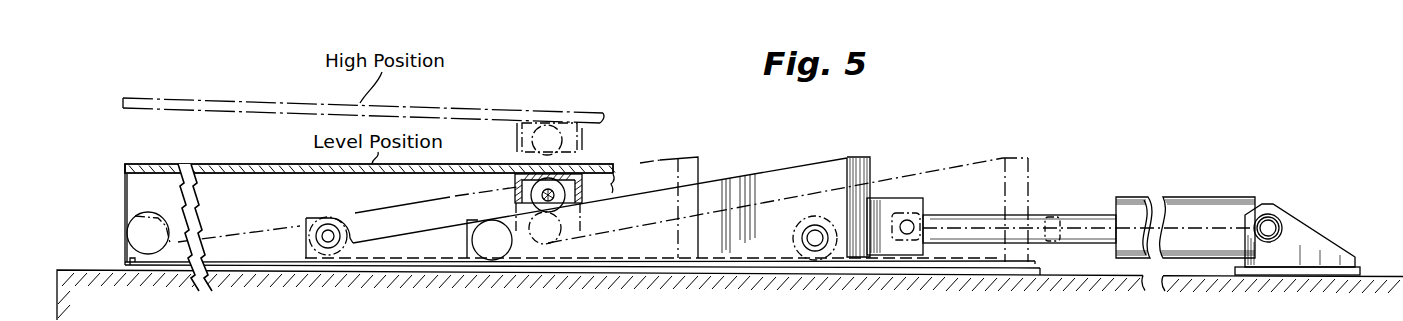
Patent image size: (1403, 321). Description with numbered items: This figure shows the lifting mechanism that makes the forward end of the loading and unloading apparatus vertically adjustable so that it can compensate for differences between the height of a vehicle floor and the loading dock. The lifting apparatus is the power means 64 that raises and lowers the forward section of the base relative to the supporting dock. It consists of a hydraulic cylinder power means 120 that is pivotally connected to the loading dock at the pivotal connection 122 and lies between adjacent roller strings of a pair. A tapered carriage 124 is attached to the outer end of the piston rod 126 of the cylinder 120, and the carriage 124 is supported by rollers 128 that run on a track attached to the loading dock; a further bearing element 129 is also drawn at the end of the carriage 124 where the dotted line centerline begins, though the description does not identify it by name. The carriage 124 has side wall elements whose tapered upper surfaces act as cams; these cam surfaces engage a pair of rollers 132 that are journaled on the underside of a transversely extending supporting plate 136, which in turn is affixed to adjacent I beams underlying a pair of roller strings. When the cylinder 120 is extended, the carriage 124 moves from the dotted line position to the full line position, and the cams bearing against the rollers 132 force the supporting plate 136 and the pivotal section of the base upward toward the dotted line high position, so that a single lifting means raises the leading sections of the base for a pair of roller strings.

The power means 64 is at (1044, 165).
The hydraulic cylinder power means 120 is at (1200, 207).
The pivotal connection to the loading dock 122 is at (1270, 222).
The tapered carriage 124 is at (766, 163).
The piston rod 126 is at (1080, 218).
The rollers 128 is at (810, 252).
The pivot bearing 129 is at (328, 248).
The rollers 132 is at (582, 203).
The transversely extending supporting plate 136 is at (492, 152).